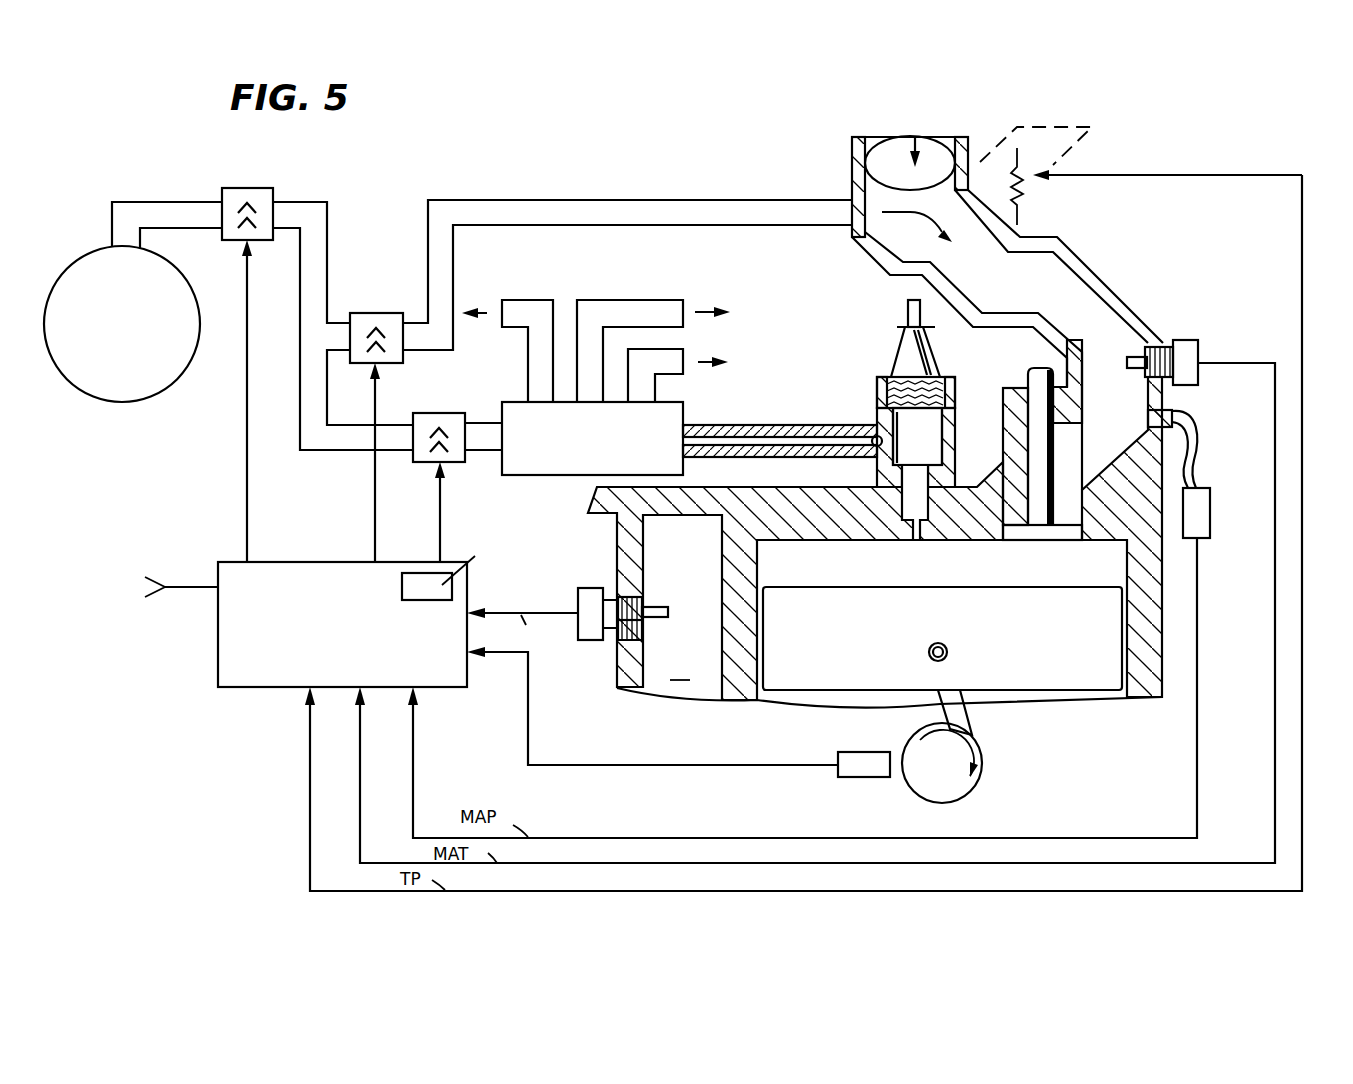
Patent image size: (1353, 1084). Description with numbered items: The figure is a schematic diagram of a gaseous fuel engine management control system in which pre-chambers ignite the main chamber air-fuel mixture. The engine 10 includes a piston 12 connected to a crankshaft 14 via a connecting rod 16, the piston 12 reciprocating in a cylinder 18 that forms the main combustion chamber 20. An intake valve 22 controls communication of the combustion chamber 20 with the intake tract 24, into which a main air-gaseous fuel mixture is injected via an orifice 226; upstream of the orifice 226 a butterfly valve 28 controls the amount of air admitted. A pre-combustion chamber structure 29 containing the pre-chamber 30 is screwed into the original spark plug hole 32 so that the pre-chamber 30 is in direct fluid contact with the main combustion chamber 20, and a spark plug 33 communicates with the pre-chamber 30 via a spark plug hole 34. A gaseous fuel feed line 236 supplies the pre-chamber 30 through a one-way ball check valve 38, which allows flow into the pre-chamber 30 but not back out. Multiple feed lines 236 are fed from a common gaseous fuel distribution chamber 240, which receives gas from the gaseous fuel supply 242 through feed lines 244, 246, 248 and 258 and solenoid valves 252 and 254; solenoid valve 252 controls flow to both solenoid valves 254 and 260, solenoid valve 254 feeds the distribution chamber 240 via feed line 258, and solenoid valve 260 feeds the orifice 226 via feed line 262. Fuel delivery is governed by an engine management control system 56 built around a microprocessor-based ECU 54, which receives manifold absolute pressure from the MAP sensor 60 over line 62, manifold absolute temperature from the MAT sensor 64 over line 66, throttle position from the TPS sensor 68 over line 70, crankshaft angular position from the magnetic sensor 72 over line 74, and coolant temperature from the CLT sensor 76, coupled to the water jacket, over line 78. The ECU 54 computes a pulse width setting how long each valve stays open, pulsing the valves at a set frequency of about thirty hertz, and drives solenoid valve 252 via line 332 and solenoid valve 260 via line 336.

The engine 10 is at (717, 909).
The piston 12 is at (1014, 649).
The crankshaft 14 is at (983, 762).
The connecting rod 16 is at (960, 714).
The cylinder 18 is at (1158, 597).
The main combustion chamber 20 is at (824, 572).
The intake valve 22 is at (1057, 462).
The intake tract 24 is at (1090, 322).
The butterfly valve 28 is at (900, 137).
The pre-combustion chamber structure 29 is at (924, 393).
The pre-chamber 30 is at (945, 465).
The original spark plug hole 32 is at (927, 550).
The spark plug 33 is at (933, 358).
The spark plug hole 34 is at (890, 378).
The one-way ball check valve 38 is at (864, 415).
The ECU 54 is at (316, 640).
The engine management control system 56 is at (183, 657).
The MAP sensor 60 is at (1202, 520).
The line 62 is at (1203, 727).
The MAT sensor 64 is at (1180, 339).
The line 66 is at (1275, 433).
The TPS sensor 68 is at (1080, 163).
The line 70 is at (1276, 175).
The magnetic sensor 72 is at (830, 765).
The line 74 is at (623, 764).
The CLT sensor 76 is at (578, 597).
The line 78 is at (500, 612).
The orifice 226 is at (850, 212).
The gaseous fuel feed line 236 is at (737, 424).
The gaseous fuel distribution chamber 240 is at (600, 456).
The gaseous fuel supply 242 is at (98, 402).
The feed line 244 is at (137, 201).
The feed line 246 is at (327, 243).
The feed line 248 is at (343, 453).
The solenoid valve 252 is at (260, 188).
The solenoid valve 254 is at (437, 463).
The feed line 258 is at (480, 423).
The solenoid valve 260 is at (366, 313).
The feed line 262 is at (475, 200).
The line 332 is at (246, 508).
The line 336 is at (374, 554).